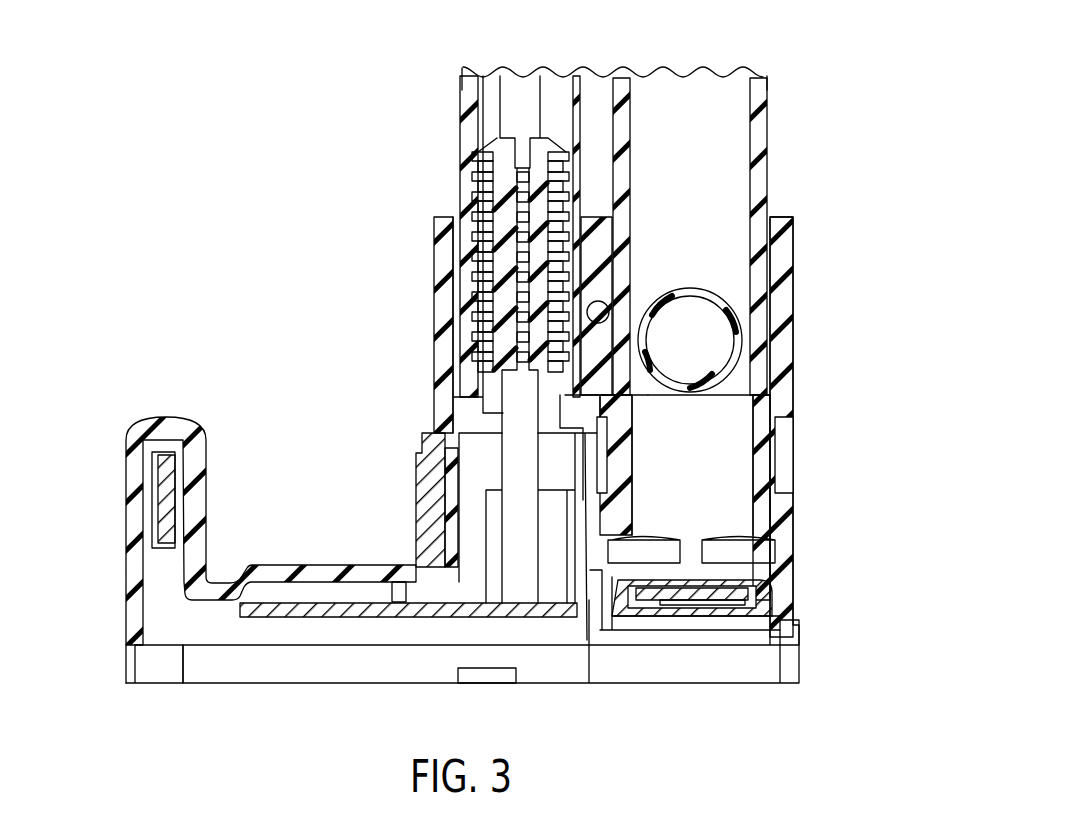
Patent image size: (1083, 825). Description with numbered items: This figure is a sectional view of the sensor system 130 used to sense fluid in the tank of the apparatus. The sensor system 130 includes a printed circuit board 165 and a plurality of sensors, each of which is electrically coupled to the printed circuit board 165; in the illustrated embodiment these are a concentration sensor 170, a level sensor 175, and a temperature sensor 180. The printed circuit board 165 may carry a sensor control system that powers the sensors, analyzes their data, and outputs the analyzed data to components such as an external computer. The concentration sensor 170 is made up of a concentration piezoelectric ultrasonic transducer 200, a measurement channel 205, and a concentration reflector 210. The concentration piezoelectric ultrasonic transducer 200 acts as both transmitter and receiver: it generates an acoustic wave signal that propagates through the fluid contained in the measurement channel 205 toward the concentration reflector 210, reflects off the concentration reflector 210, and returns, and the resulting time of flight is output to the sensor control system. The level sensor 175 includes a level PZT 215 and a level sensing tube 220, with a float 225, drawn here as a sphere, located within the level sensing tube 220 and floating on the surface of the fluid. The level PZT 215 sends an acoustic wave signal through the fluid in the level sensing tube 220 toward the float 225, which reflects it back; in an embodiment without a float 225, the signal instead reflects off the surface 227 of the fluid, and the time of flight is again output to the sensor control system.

The sensor system 130 is at (294, 184).
The printed circuit board 165 is at (264, 618).
The concentration sensor 170 is at (151, 414).
The level sensor 175 is at (818, 560).
The temperature sensor 180 is at (486, 668).
The concentration piezoelectric ultrasonic transducer 200 is at (165, 551).
The measurement channel 205 is at (277, 466).
The concentration reflector 210 is at (417, 482).
The level PZT 215 is at (690, 590).
The level sensing tube 220 is at (772, 116).
The float 225 is at (714, 297).
The surface of the fluid 227 is at (735, 403).